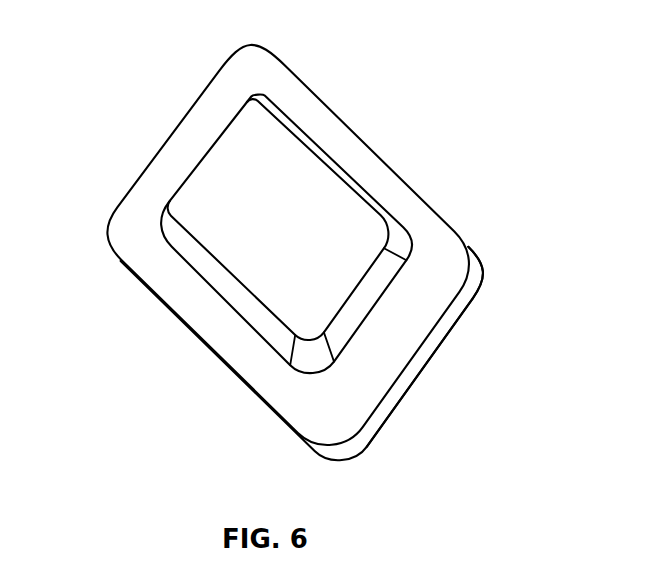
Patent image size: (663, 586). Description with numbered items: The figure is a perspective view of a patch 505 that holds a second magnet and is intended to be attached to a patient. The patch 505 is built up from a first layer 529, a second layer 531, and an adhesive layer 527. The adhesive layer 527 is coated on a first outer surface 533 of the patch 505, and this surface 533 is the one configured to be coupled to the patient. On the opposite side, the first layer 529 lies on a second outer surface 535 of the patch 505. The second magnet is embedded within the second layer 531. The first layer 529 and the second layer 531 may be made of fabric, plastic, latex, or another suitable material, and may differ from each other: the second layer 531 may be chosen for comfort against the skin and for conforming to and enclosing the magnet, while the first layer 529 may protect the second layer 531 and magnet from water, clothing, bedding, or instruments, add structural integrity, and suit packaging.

The patch 505 is at (135, 49).
The adhesive layer 527 is at (437, 363).
The first layer 529 is at (363, 190).
The second layer 531 is at (458, 305).
The first outer surface 533 is at (397, 412).
The second outer surface 535 is at (230, 352).